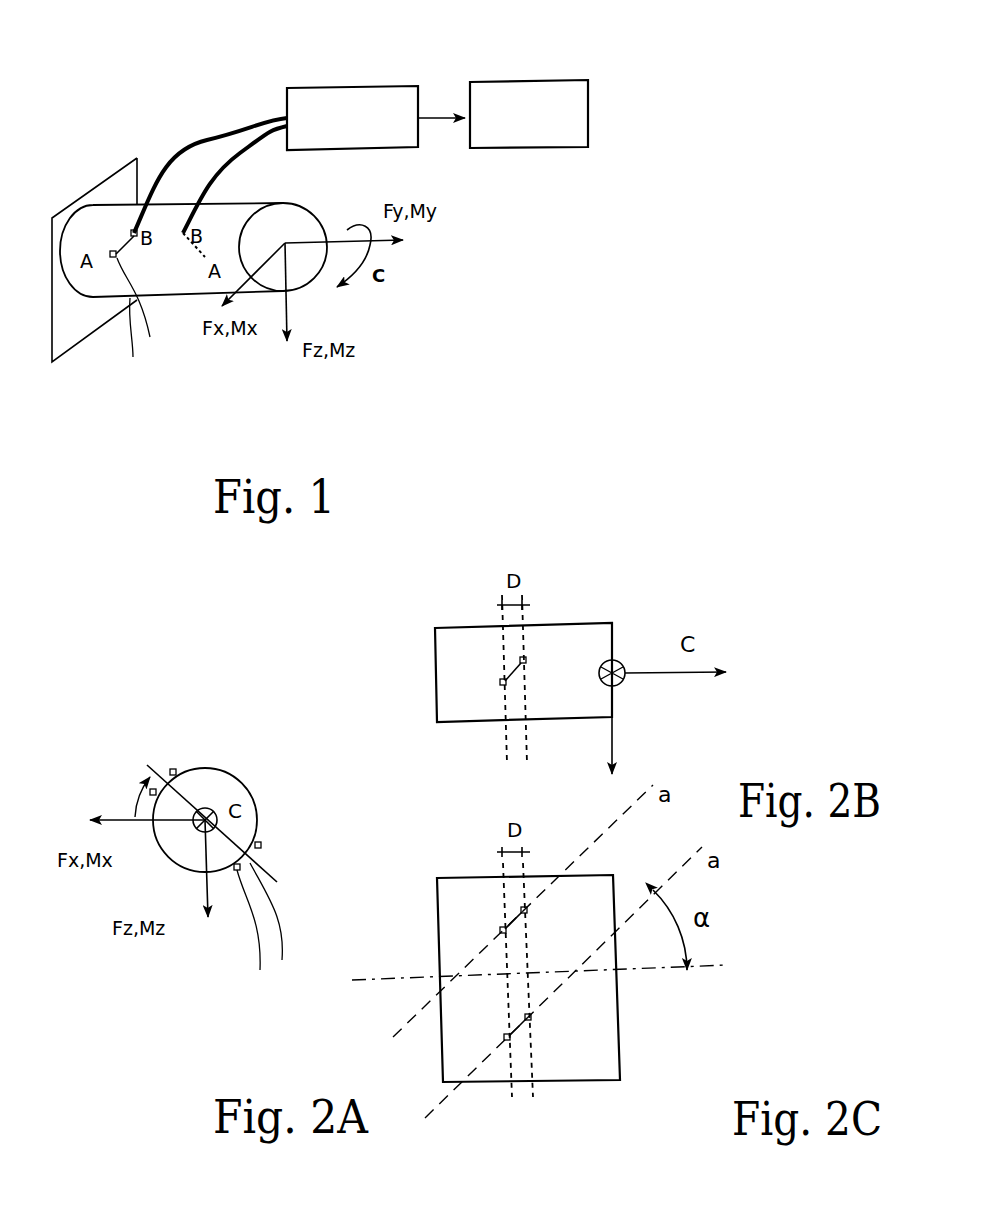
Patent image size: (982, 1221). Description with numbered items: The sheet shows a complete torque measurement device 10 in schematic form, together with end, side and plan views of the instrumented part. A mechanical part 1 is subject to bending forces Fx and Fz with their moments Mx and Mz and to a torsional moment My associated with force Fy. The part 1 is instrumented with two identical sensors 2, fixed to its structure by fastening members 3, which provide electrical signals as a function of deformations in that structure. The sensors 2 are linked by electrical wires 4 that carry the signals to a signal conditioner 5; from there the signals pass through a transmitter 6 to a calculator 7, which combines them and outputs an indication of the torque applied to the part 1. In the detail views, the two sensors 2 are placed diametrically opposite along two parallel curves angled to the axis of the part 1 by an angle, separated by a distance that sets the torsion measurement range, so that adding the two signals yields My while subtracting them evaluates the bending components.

In FIG. 1, the mechanical part 1 is at (110, 208).
In FIG. 2A, the mechanical part 1 is at (240, 772).
In FIG. 1, the sensors 2 is at (143, 309).
In FIG. 2A, the sensors 2 is at (161, 772).
In FIG. 1, the fastening members 3 is at (118, 336).
In FIG. 2A, the fastening members 3 is at (174, 768).
In FIG. 1, the electrical wires 4 is at (213, 185).
In FIG. 1, the signal conditioner 5 is at (300, 100).
In FIG. 1, the transmitter 6 is at (448, 113).
In FIG. 1, the calculator 7 is at (510, 97).
In FIG. 1, the torque measurement device 10 is at (452, 245).